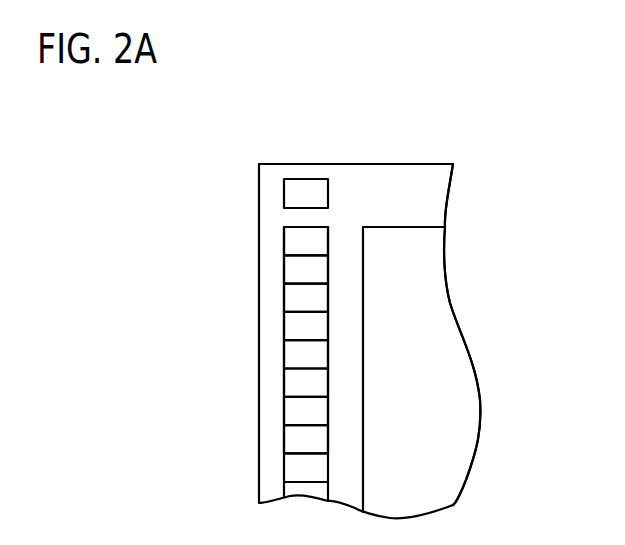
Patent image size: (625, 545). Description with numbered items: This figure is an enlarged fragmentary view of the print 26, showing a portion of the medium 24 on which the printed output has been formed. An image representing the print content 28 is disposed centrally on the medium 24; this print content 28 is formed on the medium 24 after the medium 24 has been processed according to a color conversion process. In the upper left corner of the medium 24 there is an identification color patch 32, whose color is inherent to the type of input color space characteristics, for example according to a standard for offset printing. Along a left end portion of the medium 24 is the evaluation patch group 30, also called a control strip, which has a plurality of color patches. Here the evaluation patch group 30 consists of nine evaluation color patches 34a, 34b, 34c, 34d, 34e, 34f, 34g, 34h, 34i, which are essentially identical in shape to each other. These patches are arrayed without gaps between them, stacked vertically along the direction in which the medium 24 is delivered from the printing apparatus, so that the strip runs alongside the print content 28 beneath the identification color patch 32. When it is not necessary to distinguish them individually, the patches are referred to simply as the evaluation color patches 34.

The medium 24 is at (427, 203).
The print 26 is at (406, 135).
The print content 28 is at (427, 283).
The evaluation patch group 30 is at (190, 230).
The identification color patch 32 is at (302, 190).
The evaluation color patches 34 is at (262, 364).
The evaluation color patch 34a is at (284, 242).
The evaluation color patch 34b is at (284, 270).
The evaluation color patch 34c is at (284, 298).
The evaluation color patch 34d is at (284, 326).
The evaluation color patch 34e is at (284, 354).
The evaluation color patch 34f is at (284, 383).
The evaluation color patch 34g is at (284, 411).
The evaluation color patch 34h is at (284, 439).
The evaluation color patch 34i is at (284, 467).